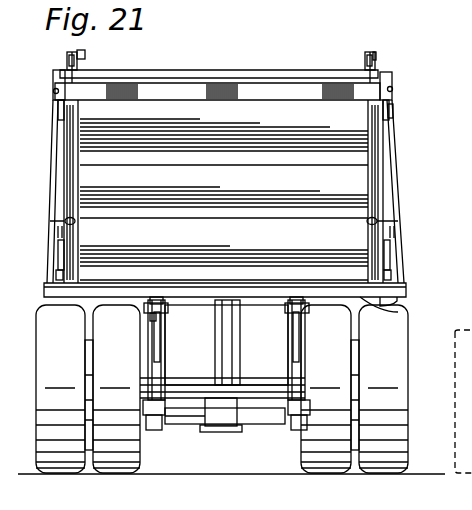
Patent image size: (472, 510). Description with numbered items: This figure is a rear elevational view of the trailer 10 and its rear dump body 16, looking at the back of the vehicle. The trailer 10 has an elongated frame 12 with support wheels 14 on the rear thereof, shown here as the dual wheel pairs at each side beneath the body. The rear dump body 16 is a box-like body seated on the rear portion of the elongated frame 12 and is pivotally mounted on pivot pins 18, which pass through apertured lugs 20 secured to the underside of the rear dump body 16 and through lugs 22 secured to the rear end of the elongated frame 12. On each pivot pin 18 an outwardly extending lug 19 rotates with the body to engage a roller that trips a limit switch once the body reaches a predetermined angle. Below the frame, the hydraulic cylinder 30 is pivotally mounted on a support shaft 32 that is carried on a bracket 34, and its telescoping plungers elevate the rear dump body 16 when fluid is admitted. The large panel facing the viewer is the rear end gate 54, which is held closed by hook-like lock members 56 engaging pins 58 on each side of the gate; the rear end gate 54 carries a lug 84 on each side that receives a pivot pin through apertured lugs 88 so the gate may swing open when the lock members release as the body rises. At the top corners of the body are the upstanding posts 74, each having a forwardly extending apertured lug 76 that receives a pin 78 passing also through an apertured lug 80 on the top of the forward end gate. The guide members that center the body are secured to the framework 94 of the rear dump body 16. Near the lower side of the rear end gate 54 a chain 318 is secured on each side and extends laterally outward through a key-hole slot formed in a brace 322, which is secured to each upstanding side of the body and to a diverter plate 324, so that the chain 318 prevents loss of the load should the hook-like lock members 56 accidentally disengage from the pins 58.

The trailer 10 is at (190, 275).
The elongated frame 12 is at (152, 352).
The support wheels 14 is at (116, 478).
The rear dump body 16 is at (310, 72).
The pivot pins 18 is at (146, 307).
The outwardly extending lug 19 is at (114, 331).
The apertured lugs 20 is at (162, 301).
The lugs 22 is at (152, 340).
The hydraulic cylinder 30 is at (233, 346).
The support shaft 32 is at (270, 420).
The bracket 34 is at (188, 415).
The rear end gate 54 is at (322, 133).
The hook-like lock members 56 is at (60, 258).
The pins 58 is at (52, 287).
The upstanding posts 74 is at (58, 73).
The forwardly extending apertured lug 76 is at (66, 63).
The pin 78 is at (80, 62).
The apertured lug 80 is at (88, 50).
The lug 84 is at (62, 103).
The apertured lugs 88 is at (58, 93).
The framework 94 is at (398, 300).
The chain 318 is at (45, 232).
The brace 322 is at (52, 166).
The diverter plate 324 is at (398, 312).